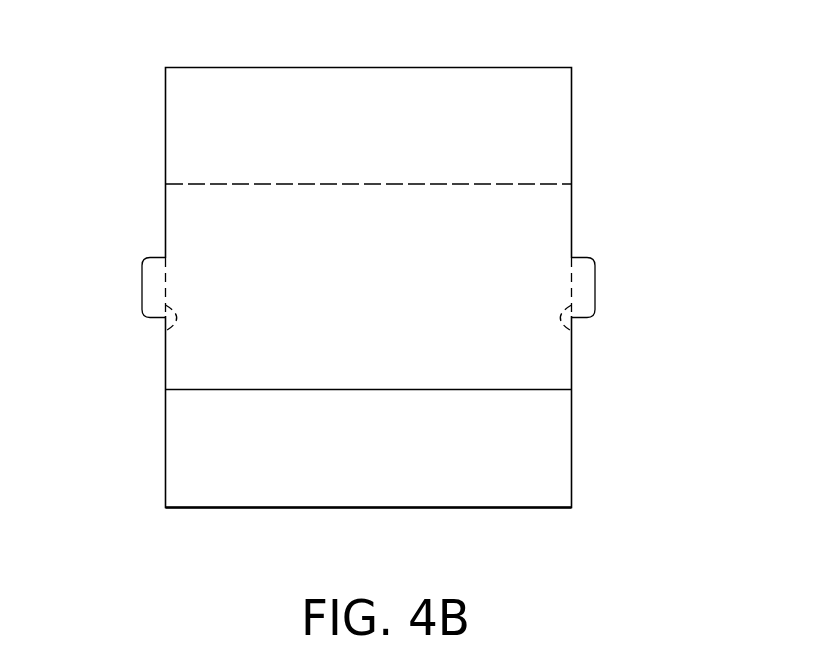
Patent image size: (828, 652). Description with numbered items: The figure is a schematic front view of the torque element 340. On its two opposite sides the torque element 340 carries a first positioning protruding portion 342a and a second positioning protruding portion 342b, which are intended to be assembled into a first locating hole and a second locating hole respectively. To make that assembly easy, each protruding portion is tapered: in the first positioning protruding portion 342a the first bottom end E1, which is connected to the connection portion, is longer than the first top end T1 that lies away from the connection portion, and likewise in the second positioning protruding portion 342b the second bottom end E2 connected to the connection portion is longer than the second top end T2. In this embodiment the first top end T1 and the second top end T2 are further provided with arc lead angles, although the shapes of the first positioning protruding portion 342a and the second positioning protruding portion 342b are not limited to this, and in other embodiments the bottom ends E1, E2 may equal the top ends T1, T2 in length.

The torque element 340 is at (206, 40).
The first positioning protruding portion 342a is at (110, 259).
The second positioning protruding portion 342b is at (628, 259).
The first top end T1 is at (142, 287).
The second top end T2 is at (595, 287).
The first bottom end E1 is at (165, 331).
The second bottom end E2 is at (572, 331).